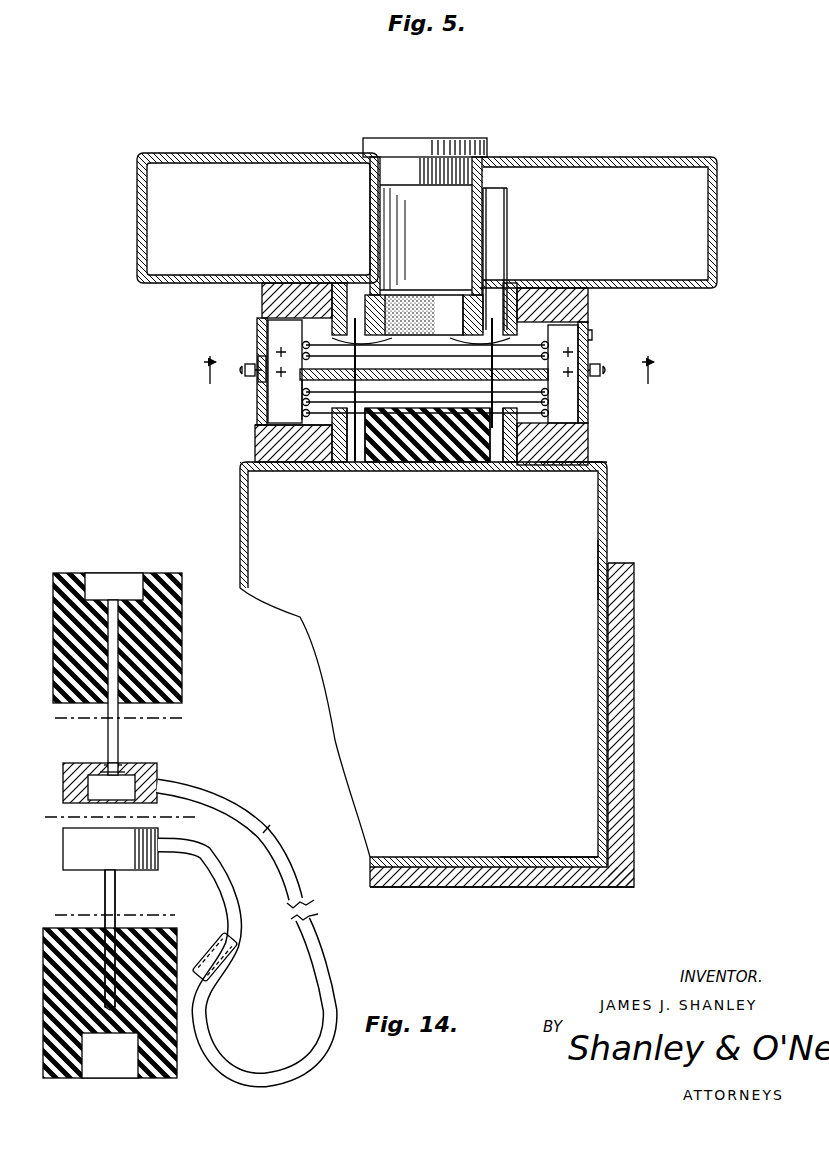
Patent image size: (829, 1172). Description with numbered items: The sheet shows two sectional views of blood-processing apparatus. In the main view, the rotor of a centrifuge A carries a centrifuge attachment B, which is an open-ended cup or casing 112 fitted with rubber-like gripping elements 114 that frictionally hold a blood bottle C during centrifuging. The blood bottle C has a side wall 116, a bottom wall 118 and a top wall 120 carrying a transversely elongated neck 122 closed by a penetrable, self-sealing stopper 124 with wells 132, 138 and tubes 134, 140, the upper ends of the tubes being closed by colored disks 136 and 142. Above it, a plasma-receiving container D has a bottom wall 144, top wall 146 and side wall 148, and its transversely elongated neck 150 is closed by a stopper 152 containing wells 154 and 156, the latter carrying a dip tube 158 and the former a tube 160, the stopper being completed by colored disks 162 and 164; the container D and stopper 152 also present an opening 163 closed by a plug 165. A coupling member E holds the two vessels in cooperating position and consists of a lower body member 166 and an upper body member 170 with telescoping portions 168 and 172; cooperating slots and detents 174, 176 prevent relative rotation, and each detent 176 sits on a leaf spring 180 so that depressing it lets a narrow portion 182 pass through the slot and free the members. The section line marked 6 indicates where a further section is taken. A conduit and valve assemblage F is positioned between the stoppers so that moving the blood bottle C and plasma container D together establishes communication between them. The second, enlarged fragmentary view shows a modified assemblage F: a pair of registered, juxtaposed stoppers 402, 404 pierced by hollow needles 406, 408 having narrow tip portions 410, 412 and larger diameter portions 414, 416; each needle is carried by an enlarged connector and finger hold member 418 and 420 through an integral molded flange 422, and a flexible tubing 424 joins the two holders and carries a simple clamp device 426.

In FIG. 5, the open-ended cup or casing 112 is at (624, 690).
In FIG. 5, the gripping elements 114 is at (612, 563).
In FIG. 5, the side wall 116 is at (600, 567).
In FIG. 5, the bottom wall 118 is at (530, 856).
In FIG. 5, the top wall 120 is at (546, 465).
In FIG. 5, the neck 122 is at (326, 466).
In FIG. 5, the stopper 124 is at (410, 464).
In FIG. 5, the well 132 is at (357, 466).
In FIG. 5, the tube 134 is at (348, 466).
In FIG. 5, the colored disk 136 is at (358, 420).
In FIG. 5, the well 138 is at (498, 464).
In FIG. 5, the tube 140 is at (492, 466).
In FIG. 5, the colored disk 142 is at (440, 374).
In FIG. 5, the bottom wall 144 is at (257, 203).
In FIG. 5, the top wall 146 is at (572, 284).
In FIG. 5, the side wall 148 is at (147, 219).
In FIG. 5, the neck 150 is at (330, 285).
In FIG. 5, the stopper 152 is at (450, 300).
In FIG. 5, the well 154 is at (346, 285).
In FIG. 5, the well 156 is at (505, 300).
In FIG. 5, the dip tube 158 is at (509, 214).
In FIG. 5, the tube 160 is at (424, 315).
In FIG. 5, the colored disk 162 is at (421, 331).
In FIG. 5, the opening 163 is at (447, 218).
In FIG. 5, the colored disk 164 is at (286, 371).
In FIG. 5, the plug 165 is at (421, 150).
In FIG. 5, the lower body member 166 is at (590, 450).
In FIG. 5, the telescoping portion 168 is at (590, 427).
In FIG. 5, the upper body member 170 is at (590, 308).
In FIG. 5, the telescoping portion 172 is at (592, 347).
In FIG. 5, the slot 174 is at (262, 402).
In FIG. 5, the detent 176 is at (250, 374).
In FIG. 5, the leaf spring 180 is at (592, 334).
In FIG. 5, the narrow portion 182 is at (262, 356).
In FIG. 5, the section line 6- 6 is at (431, 370).
In FIG. 5, the rotor of a centrifuge A is at (557, 900).
In FIG. 5, the centrifuge attachment B is at (528, 710).
In FIG. 5, the blood bottle C is at (453, 674).
In FIG. 5, the plasma-receiving bottle or container D is at (257, 196).
In FIG. 5, the coupling member E is at (246, 441).
In FIG. 5, the conduit and valve assemblage F is at (306, 392).
In FIG. 14, the conduit and valve assemblage F is at (278, 822).
In FIG. 14, the stopper 402 is at (165, 940).
In FIG. 14, the stopper 404 is at (181, 677).
In FIG. 14, the hollow needle 406 is at (118, 906).
In FIG. 14, the hollow needle 408 is at (120, 744).
In FIG. 14, the narrow portion 410 is at (108, 958).
In FIG. 14, the narrow portion 412 is at (112, 690).
In FIG. 14, the larger diameter portion 414 is at (106, 900).
In FIG. 14, the larger diameter portion 416 is at (106, 749).
In FIG. 14, the connector and finger hold member 418 is at (66, 846).
In FIG. 14, the connector and finger hold member 420 is at (158, 771).
In FIG. 14, the flange 422 is at (130, 770).
In FIG. 14, the flexible tubing 424 is at (322, 985).
In FIG. 14, the clamp device 426 is at (226, 965).